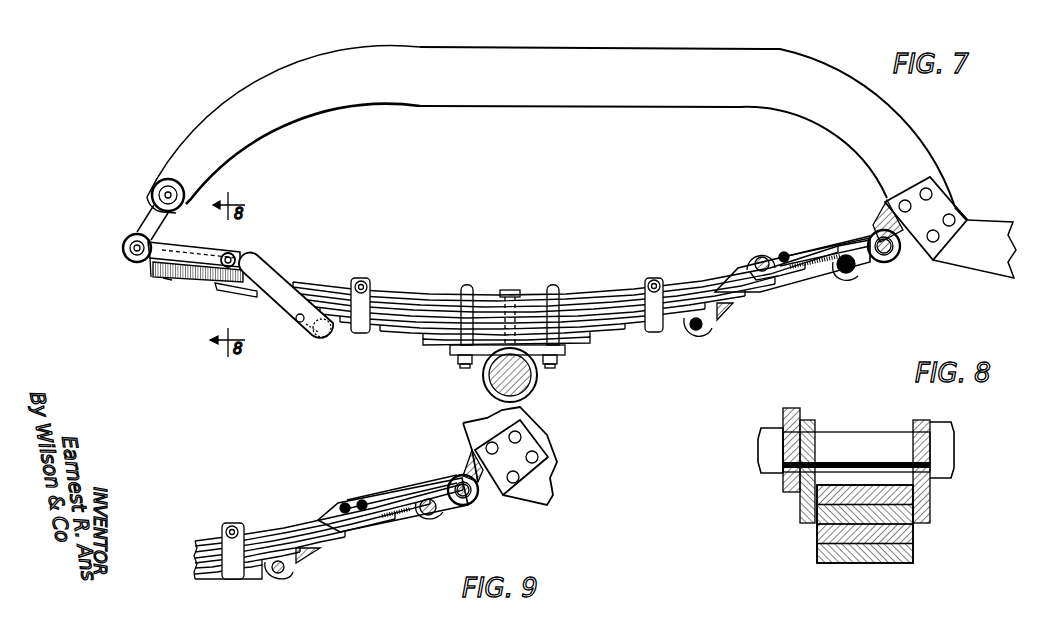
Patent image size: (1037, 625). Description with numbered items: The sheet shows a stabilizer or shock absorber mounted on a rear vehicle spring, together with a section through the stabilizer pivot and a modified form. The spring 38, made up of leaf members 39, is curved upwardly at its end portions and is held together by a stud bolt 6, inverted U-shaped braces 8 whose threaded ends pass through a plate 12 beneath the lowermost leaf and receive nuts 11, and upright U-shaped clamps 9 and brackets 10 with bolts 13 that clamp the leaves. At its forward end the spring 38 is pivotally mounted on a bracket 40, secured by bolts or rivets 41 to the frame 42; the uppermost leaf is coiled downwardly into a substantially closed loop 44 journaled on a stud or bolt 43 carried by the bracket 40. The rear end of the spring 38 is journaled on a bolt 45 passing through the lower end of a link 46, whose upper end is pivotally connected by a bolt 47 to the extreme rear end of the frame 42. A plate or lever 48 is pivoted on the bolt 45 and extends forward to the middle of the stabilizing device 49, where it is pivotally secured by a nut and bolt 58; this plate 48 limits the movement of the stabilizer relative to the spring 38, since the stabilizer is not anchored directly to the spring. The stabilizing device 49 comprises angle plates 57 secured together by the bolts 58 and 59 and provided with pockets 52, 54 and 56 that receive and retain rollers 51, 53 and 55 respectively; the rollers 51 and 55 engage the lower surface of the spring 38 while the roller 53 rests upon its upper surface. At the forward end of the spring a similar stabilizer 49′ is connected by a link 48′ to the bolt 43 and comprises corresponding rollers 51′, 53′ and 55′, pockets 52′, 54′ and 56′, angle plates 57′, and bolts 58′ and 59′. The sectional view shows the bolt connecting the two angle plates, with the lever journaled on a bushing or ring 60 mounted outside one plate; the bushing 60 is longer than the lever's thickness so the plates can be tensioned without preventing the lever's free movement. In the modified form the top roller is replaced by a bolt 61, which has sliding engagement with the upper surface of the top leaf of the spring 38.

In FIG. 7, the stud bolt 6 is at (511, 290).
In FIG. 7, the inverted U-shaped brackets 8 is at (469, 289).
In FIG. 7, the upright U-shaped brackets 9 is at (368, 289).
In FIG. 9, the upright U-shaped brackets 9 is at (232, 526).
In FIG. 7, the upright U-shaped brackets 10 is at (361, 333).
In FIG. 9, the upright U-shaped brackets 10 is at (242, 579).
In FIG. 7, the nut 11 is at (458, 362).
In FIG. 7, the plate 12 is at (566, 352).
In FIG. 7, the bolts 13 is at (362, 284).
In FIG. 9, the bolts 13 is at (226, 531).
In FIG. 7, the spring 38 is at (410, 294).
In FIG. 9, the spring 38 is at (270, 530).
In FIG. 8, the spring 38 is at (817, 548).
In FIG. 7, the leaf members 39 is at (592, 308).
In FIG. 8, the leaf members 39 is at (912, 530).
In FIG. 7, the bracket 40 is at (947, 205).
In FIG. 9, the bracket 40 is at (500, 493).
In FIG. 7, the bolts or rivets 41 is at (939, 236).
In FIG. 9, the bolts or rivets 41 is at (509, 436).
In FIG. 7, the frame 42 is at (918, 155).
In FIG. 9, the frame 42 is at (480, 428).
In FIG. 7, the stud or bolt 43 is at (886, 263).
In FIG. 9, the stud or bolt 43 is at (467, 500).
In FIG. 7, the loop 44 is at (873, 238).
In FIG. 9, the loop 44 is at (457, 483).
In FIG. 7, the bolt 45 is at (123, 245).
In FIG. 7, the link 46 is at (147, 225).
In FIG. 7, the bolt 47 is at (158, 192).
In FIG. 7, the plate or lever 48 is at (197, 250).
In FIG. 8, the plate or lever 48 is at (796, 416).
In FIG. 7, the link 48′ is at (818, 252).
In FIG. 7, the stabilizing device 49 is at (287, 271).
In FIG. 7, the stabilizer 49′ is at (735, 274).
In FIG. 7, the roller 51 is at (313, 337).
In FIG. 7, the roller 51′ is at (855, 278).
In FIG. 7, the pockets 52 is at (327, 338).
In FIG. 7, the pockets 52′ is at (846, 278).
In FIG. 7, the roller 53 is at (232, 286).
In FIG. 7, the roller 53′ is at (765, 282).
In FIG. 7, the pocket 54 is at (260, 263).
In FIG. 7, the pocket 54′ is at (757, 258).
In FIG. 7, the roller 55 is at (154, 278).
In FIG. 7, the roller 55′ is at (695, 335).
In FIG. 7, the pocket 56 is at (168, 281).
In FIG. 7, the pocket 56′ is at (704, 333).
In FIG. 7, the angle plates 57 is at (203, 277).
In FIG. 8, the angle plates 57 is at (800, 508).
In FIG. 7, the angle plates 57′ is at (822, 280).
In FIG. 7, the nut and bolt 58 is at (237, 258).
In FIG. 8, the nut and bolt 58 is at (855, 442).
In FIG. 7, the bolt 58′ is at (786, 253).
In FIG. 7, the bolt 59 is at (297, 321).
In FIG. 7, the bolt 59′ is at (724, 320).
In FIG. 8, the bushing or ring 60 is at (781, 432).
In FIG. 9, the bolt 61 is at (341, 506).